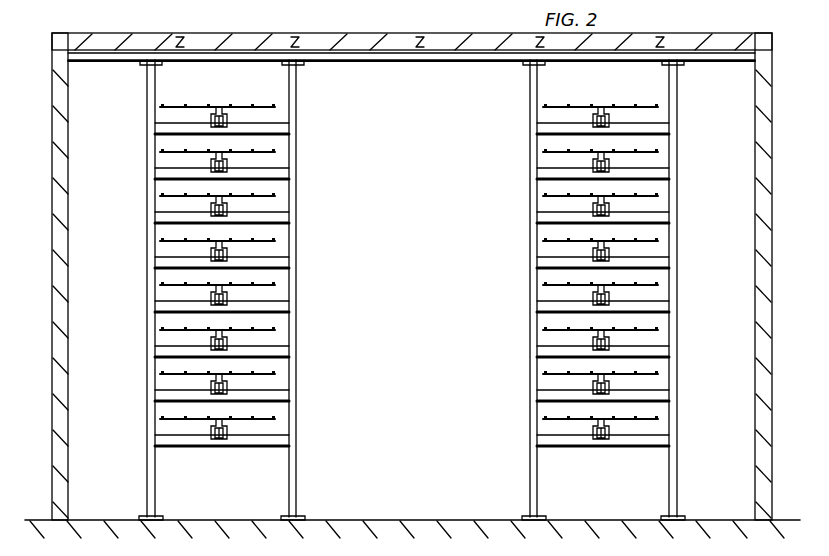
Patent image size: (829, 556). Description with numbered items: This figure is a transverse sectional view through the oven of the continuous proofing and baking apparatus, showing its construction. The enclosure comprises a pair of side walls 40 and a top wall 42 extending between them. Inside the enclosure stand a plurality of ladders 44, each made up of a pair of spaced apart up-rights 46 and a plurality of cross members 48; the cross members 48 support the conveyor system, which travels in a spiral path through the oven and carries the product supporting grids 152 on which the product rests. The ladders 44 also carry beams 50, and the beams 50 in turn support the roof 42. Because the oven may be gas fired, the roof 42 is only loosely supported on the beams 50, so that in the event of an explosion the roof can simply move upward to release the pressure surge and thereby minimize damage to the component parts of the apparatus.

The side walls 40 is at (68, 139).
The top wall 42 is at (285, 38).
The ladders 44 is at (298, 226).
The up-rights 46 is at (146, 332).
The cross members 48 is at (158, 146).
The beams 50 is at (386, 62).
The product supporting grids 152 is at (272, 114).